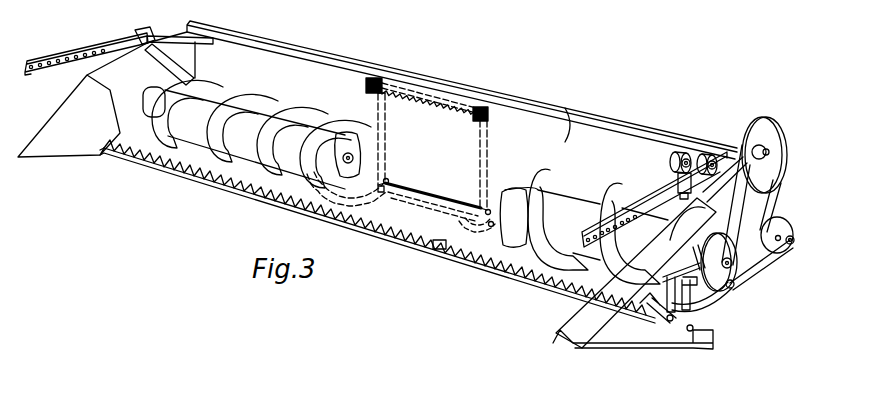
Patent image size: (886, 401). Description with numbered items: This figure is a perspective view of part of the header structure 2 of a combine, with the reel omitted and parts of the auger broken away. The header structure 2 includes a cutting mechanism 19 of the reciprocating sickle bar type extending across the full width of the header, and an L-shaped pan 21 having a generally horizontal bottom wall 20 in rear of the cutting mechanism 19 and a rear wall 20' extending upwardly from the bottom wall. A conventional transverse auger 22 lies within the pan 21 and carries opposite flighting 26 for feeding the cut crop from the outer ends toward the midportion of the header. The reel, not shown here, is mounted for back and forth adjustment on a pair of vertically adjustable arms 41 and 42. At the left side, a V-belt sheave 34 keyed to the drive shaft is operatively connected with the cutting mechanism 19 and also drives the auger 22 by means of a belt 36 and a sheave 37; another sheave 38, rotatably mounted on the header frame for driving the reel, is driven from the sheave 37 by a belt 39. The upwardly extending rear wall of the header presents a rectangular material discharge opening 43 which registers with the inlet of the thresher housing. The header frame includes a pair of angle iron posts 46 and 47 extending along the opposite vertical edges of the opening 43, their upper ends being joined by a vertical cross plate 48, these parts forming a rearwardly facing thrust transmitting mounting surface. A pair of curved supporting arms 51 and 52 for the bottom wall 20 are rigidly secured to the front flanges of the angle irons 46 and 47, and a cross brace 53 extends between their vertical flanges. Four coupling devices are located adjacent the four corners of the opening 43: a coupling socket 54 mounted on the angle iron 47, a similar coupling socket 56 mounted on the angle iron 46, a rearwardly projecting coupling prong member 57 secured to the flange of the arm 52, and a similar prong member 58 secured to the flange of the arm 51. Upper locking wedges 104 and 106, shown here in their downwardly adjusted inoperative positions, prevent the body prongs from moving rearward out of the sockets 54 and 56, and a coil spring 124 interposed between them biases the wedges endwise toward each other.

The header structure 2 is at (606, 120).
The cutting mechanism 19 is at (535, 284).
The bottom wall 20 is at (375, 227).
The rear wall 20' is at (576, 100).
The pan 21 is at (482, 268).
The auger 22 is at (305, 108).
The flighting 26 is at (262, 101).
The V-belt sheave 34 is at (762, 266).
The belt 36 is at (768, 220).
The sheave 37 is at (722, 240).
The sheave 38 is at (772, 118).
The belt 39 is at (771, 178).
The vertically adjustable arm 41 is at (62, 52).
The vertically adjustable arm 42 is at (640, 205).
The material discharge opening 43 is at (450, 204).
The angle iron post 46 is at (386, 144).
The angle iron post 47 is at (489, 144).
The vertical cross plate 48 is at (441, 86).
The curved supporting arm 51 is at (366, 189).
The curved supporting arm 52 is at (469, 245).
The cross brace 53 is at (462, 206).
The coupling socket 54 is at (467, 145).
The coupling socket 56 is at (352, 150).
The coupling prong member 57 is at (492, 212).
The coupling prong member 58 is at (392, 186).
The upper locking wedge 104 is at (489, 113).
The upper locking wedge 106 is at (372, 78).
The coil spring 124 is at (405, 100).